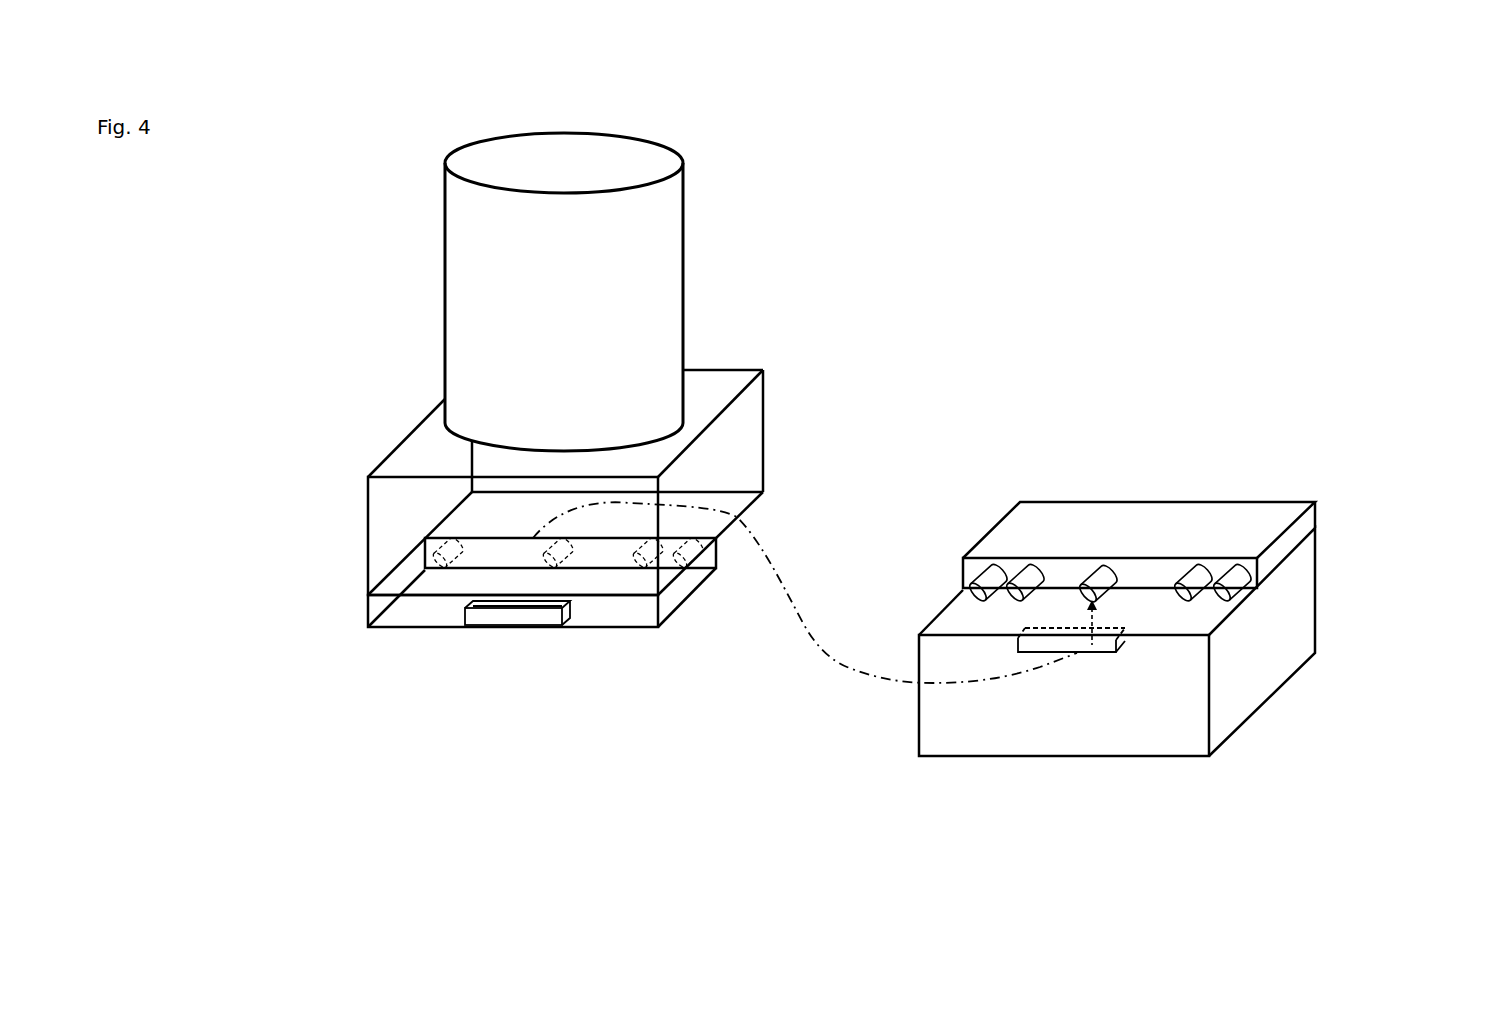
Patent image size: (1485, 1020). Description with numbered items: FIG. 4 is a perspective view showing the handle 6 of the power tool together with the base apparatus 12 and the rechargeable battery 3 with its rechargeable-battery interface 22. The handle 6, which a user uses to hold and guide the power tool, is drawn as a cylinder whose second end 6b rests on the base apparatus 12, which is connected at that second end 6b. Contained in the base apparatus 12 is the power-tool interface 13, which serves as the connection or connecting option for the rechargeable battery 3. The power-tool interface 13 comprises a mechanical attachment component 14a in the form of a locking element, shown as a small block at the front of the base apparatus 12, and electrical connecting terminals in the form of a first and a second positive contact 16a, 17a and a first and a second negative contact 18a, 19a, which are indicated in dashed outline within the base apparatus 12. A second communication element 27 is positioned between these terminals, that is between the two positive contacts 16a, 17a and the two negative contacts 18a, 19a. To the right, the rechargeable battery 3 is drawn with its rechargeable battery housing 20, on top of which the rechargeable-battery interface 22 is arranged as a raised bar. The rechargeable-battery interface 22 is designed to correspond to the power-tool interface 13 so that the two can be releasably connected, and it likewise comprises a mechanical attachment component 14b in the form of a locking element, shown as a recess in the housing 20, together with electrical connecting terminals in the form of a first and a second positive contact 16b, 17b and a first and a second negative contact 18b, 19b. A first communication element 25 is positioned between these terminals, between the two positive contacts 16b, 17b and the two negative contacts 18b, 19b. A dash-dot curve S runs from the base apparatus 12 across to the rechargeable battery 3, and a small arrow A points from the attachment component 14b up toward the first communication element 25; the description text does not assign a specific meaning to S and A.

The handle 6 is at (475, 283).
The second end of the handle 6b is at (602, 433).
The base apparatus 12 is at (383, 553).
The power-tool interface 13 is at (380, 605).
The mechanical attachment component 14a is at (527, 618).
The mechanical attachment component 14b is at (1023, 627).
The first positive contact 16a is at (425, 553).
The first positive contact 16b is at (985, 578).
The second positive contact 17a is at (440, 548).
The second positive contact 17b is at (1030, 575).
The first negative contact 18a is at (648, 560).
The first negative contact 18b is at (1197, 575).
The second negative contact 19a is at (683, 560).
The second negative contact 19b is at (1250, 573).
The rechargeable battery housing 20 is at (1283, 630).
The rechargeable-battery interface 22 is at (1293, 538).
The first communication element 25 is at (1105, 575).
The second communication element 27 is at (548, 555).
The rechargeable battery 3 is at (1285, 714).
The signal path S is at (805, 592).
The direction arrow A is at (1092, 622).